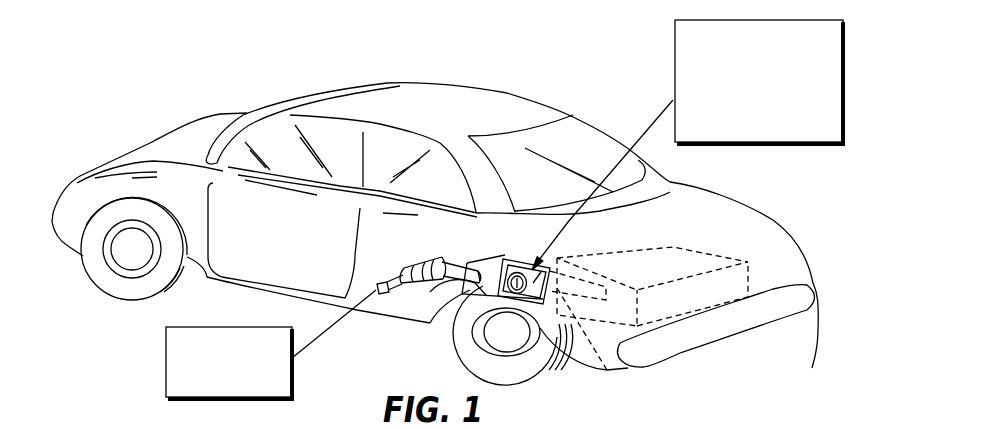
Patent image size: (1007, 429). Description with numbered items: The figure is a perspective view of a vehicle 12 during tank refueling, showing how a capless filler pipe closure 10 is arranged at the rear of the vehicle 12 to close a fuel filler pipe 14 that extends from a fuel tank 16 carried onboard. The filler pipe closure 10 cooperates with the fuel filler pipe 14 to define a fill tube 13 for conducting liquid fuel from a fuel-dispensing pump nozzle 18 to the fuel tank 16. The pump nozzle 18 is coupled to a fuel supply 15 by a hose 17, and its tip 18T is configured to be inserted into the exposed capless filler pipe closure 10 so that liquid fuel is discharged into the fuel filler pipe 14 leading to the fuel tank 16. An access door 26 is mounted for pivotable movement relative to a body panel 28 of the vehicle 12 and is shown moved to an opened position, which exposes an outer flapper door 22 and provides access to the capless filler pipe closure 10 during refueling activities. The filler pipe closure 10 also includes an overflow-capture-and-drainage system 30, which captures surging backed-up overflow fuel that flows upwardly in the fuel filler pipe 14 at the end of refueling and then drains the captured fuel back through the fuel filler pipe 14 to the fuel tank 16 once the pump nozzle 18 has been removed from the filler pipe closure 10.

The capless filler pipe closure 10 is at (673, 52).
The vehicle 12 is at (137, 76).
The fill tube 13 is at (640, 393).
The fuel filler pipe 14 is at (607, 369).
The fuel supply 15 is at (166, 366).
The fuel tank 16 is at (664, 267).
The hose 17 is at (324, 340).
The fuel-dispensing pump nozzle 18 is at (409, 236).
The tip 18T is at (470, 278).
The outer flapper door 22 is at (518, 258).
The access door 26 is at (436, 322).
The body panel 28 is at (498, 244).
The overflow-capture-and-drainage system 30 is at (565, 258).